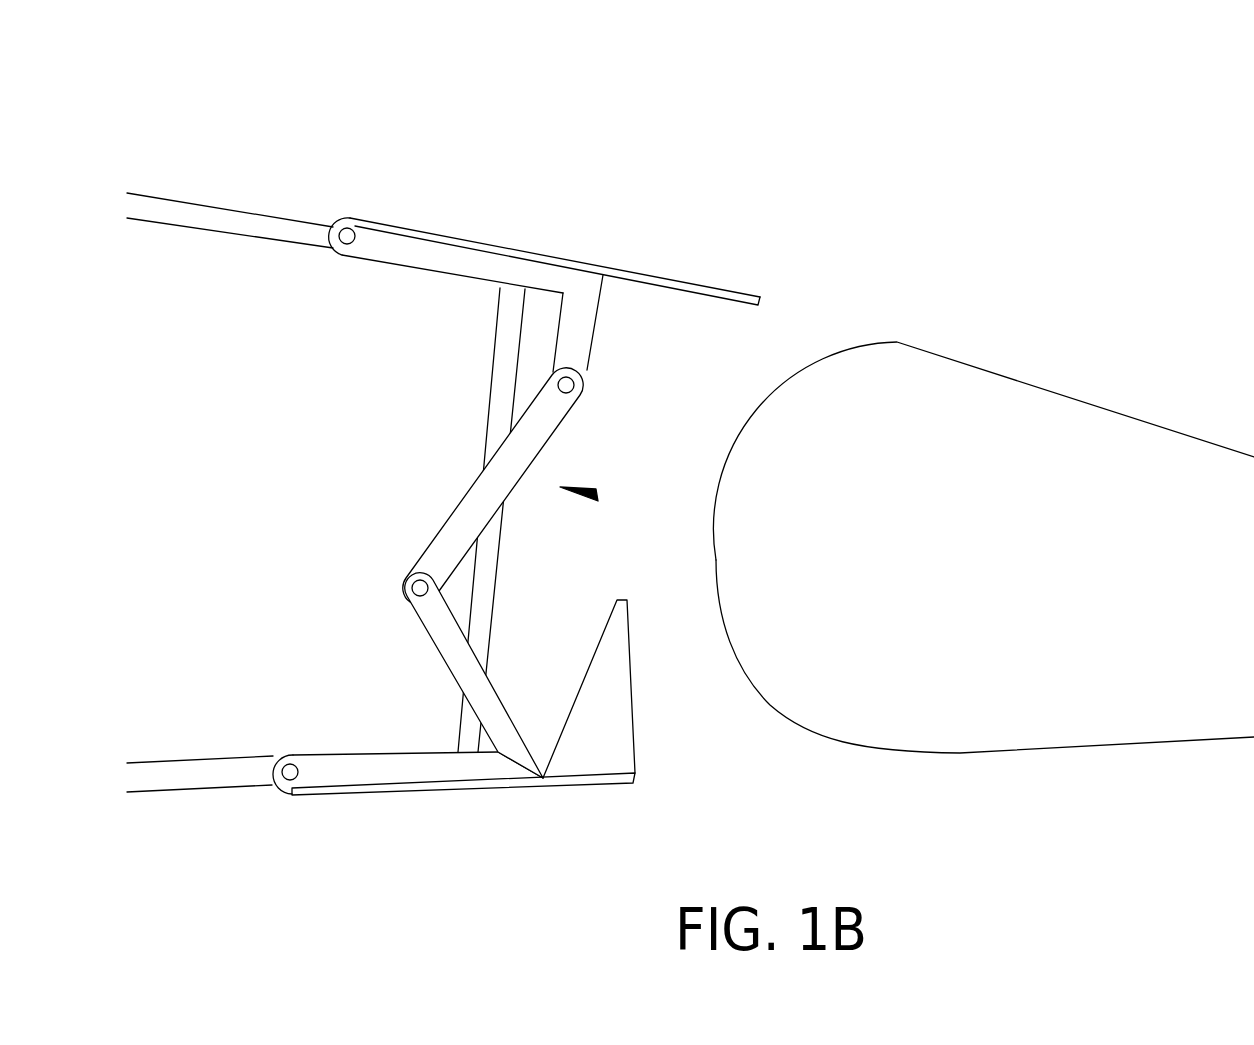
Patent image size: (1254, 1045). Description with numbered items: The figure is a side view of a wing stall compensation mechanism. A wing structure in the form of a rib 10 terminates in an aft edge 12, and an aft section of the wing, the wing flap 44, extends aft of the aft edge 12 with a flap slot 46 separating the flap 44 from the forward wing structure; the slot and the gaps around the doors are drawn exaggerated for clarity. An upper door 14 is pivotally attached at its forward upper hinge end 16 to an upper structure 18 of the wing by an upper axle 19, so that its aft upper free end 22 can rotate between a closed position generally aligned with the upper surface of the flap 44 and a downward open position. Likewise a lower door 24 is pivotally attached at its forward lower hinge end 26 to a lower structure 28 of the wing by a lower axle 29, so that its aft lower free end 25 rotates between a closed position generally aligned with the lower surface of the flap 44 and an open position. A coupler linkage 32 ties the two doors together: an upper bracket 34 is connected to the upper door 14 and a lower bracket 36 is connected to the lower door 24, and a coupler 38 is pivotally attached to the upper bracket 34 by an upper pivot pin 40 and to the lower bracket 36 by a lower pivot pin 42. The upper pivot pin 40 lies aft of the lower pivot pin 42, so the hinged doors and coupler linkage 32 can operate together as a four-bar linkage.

The rib 10 is at (230, 160).
The aft edge 12 is at (500, 390).
The upper door 14 is at (629, 227).
The forward upper hinge end 16 is at (337, 217).
The upper structure 18 is at (293, 233).
The upper axle 19 is at (350, 232).
The aft upper free end 22 is at (755, 288).
The lower door 24 is at (440, 787).
The aft lower free end 25 is at (633, 785).
The forward lower hinge end 26 is at (273, 787).
The lower structure 28 is at (187, 772).
The lower axle 29 is at (291, 765).
The coupler linkage 32 is at (597, 496).
The upper bracket 34 is at (455, 255).
The lower bracket 36 is at (447, 647).
The coupler 38 is at (487, 490).
The upper pivot pin 40 is at (566, 385).
The lower pivot pin 42 is at (420, 588).
The wing flap 44 is at (1005, 553).
The flap slot 46 is at (670, 595).